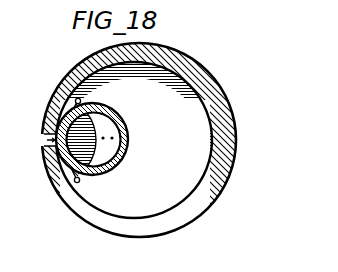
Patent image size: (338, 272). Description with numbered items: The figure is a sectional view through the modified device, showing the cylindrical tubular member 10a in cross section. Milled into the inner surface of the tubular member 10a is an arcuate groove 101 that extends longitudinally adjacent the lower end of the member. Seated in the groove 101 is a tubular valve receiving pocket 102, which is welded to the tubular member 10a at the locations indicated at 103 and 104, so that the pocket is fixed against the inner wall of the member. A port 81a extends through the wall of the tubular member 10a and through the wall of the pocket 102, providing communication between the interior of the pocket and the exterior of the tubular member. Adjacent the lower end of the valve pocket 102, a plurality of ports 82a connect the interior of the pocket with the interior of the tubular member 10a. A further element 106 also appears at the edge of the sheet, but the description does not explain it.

The tubular member 10a is at (178, 57).
The strap 101 is at (49, 119).
The eyelet ring 102 is at (108, 112).
The rivet 103 is at (84, 96).
The rivet 104 is at (82, 182).
The cord 82a is at (112, 142).
The slot 81a is at (45, 134).
The member 106 is at (7, 257).